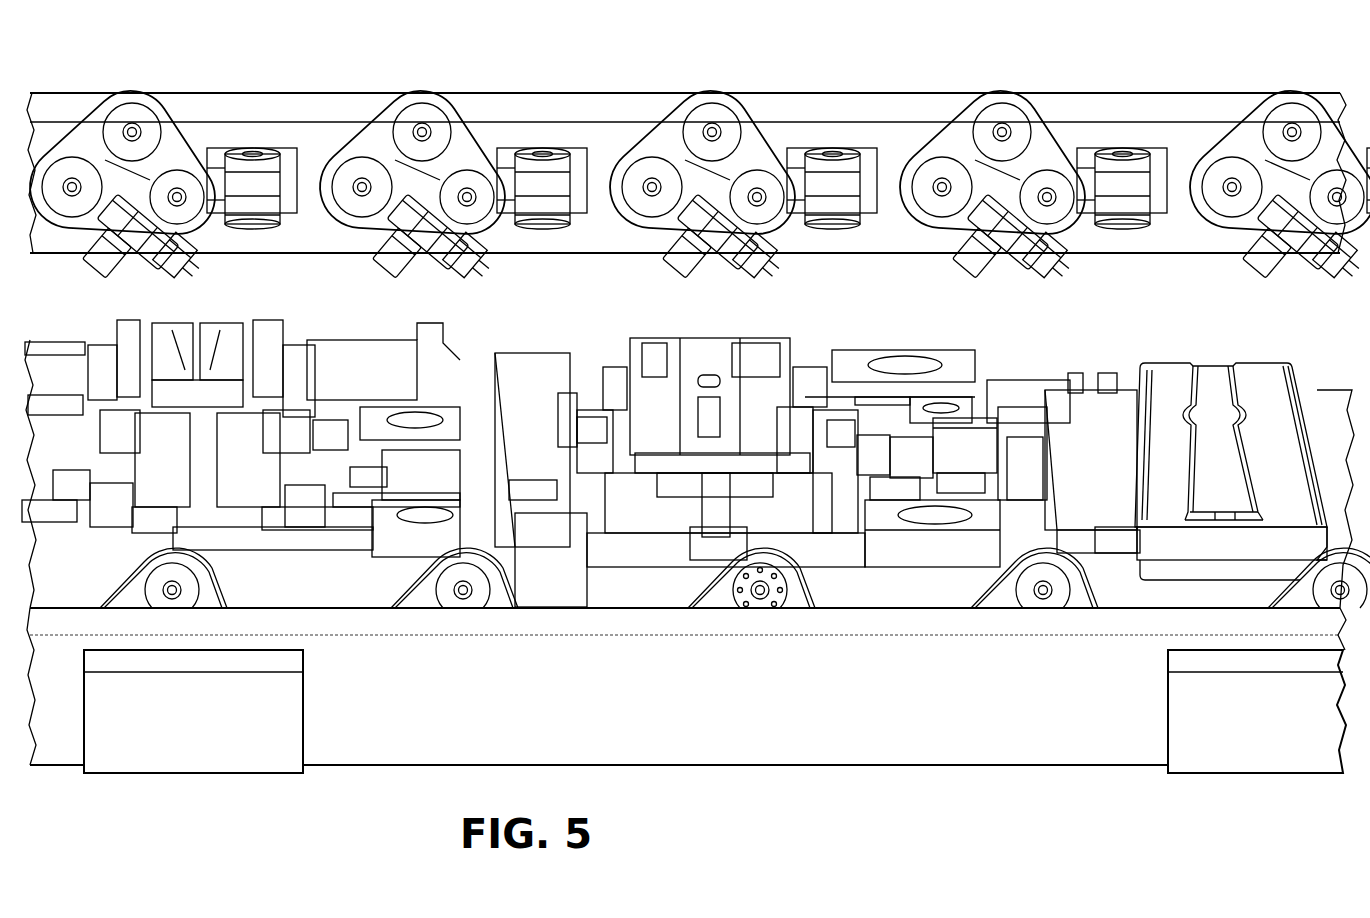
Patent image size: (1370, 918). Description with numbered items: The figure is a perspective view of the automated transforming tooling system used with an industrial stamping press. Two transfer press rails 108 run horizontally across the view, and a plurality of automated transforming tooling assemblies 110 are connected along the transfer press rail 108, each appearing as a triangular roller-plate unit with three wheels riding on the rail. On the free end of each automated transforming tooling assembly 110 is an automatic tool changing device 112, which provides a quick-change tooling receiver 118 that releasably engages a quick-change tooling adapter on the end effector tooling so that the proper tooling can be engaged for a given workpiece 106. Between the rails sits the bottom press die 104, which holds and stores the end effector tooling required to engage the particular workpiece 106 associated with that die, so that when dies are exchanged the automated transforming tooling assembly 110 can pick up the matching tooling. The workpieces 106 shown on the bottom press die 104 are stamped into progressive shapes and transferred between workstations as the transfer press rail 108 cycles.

The bottom press die 104 is at (337, 335).
The workpiece 106 is at (168, 322).
The transfer press rail 108 is at (858, 107).
The automated transforming tooling assembly 110 is at (395, 112).
The automatic tool changing device 112 is at (433, 267).
The quick-change tooling receiver 118 is at (487, 265).